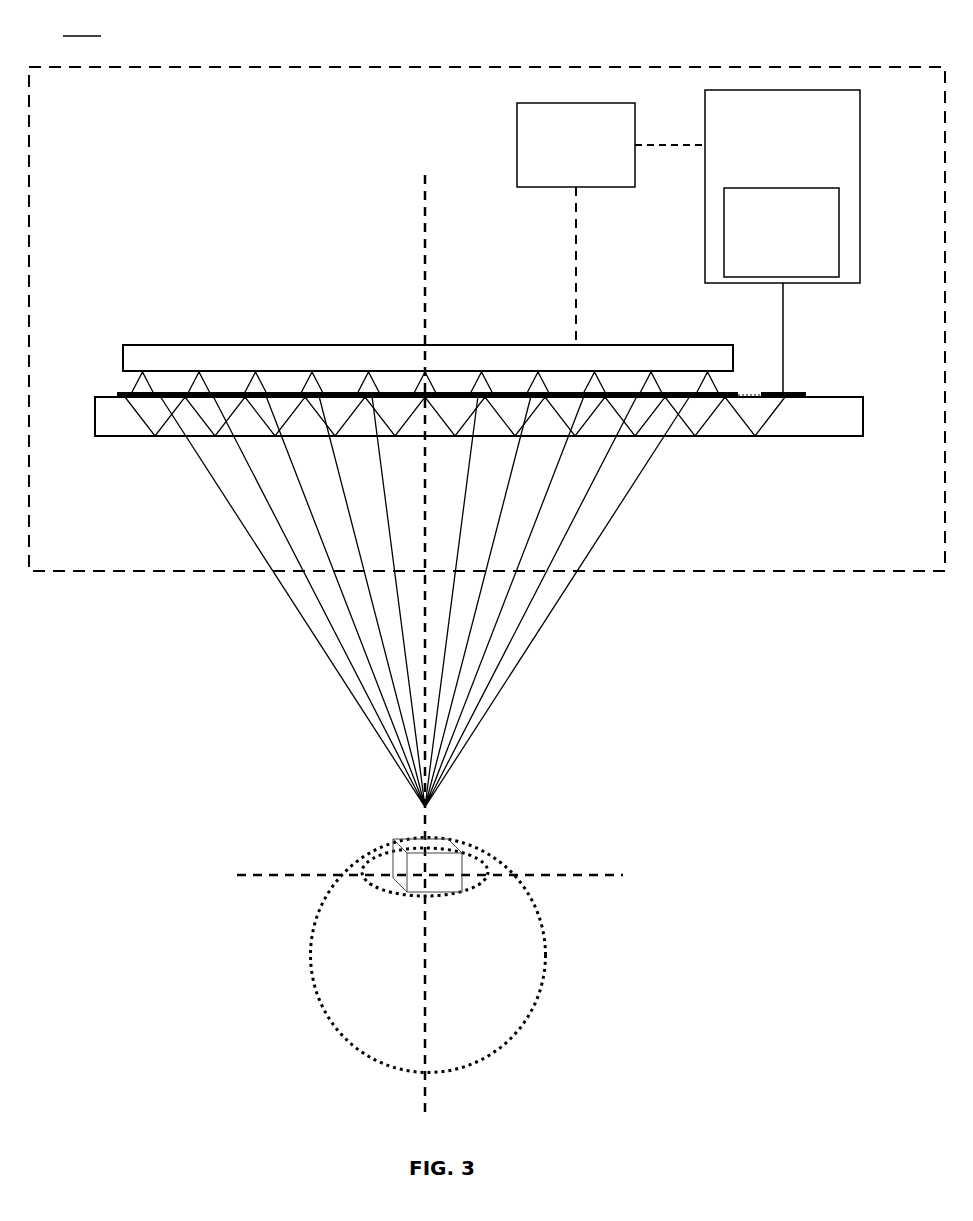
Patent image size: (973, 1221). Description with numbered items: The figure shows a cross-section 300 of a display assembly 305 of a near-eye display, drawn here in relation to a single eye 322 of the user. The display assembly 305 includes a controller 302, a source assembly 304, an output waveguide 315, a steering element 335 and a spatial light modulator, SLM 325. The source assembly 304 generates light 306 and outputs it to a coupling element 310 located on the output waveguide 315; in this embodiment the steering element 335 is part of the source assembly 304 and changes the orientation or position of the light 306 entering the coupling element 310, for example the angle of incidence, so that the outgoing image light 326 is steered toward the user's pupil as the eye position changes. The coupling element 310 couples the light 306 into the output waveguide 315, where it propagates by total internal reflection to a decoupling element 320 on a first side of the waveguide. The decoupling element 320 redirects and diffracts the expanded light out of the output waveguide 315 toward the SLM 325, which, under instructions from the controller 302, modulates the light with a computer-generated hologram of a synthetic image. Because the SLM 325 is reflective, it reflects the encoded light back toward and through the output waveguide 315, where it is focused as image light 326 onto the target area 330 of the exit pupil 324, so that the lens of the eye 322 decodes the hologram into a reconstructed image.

The cross-section 300 is at (82, 25).
The controller 302 is at (611, 224).
The source assembly 304 is at (782, 186).
The display assembly 305 is at (702, 572).
The light 306 is at (778, 360).
The coupling element 310 is at (806, 387).
The output waveguide 315 is at (798, 417).
The decoupling element 320 is at (117, 392).
The eye 322 is at (325, 1015).
The exit pupil 324 is at (623, 875).
The spatial light modulator (SLM) 325 is at (358, 345).
The image light 326 is at (335, 668).
The target area 330 is at (445, 865).
The steering element 335 is at (781, 232).